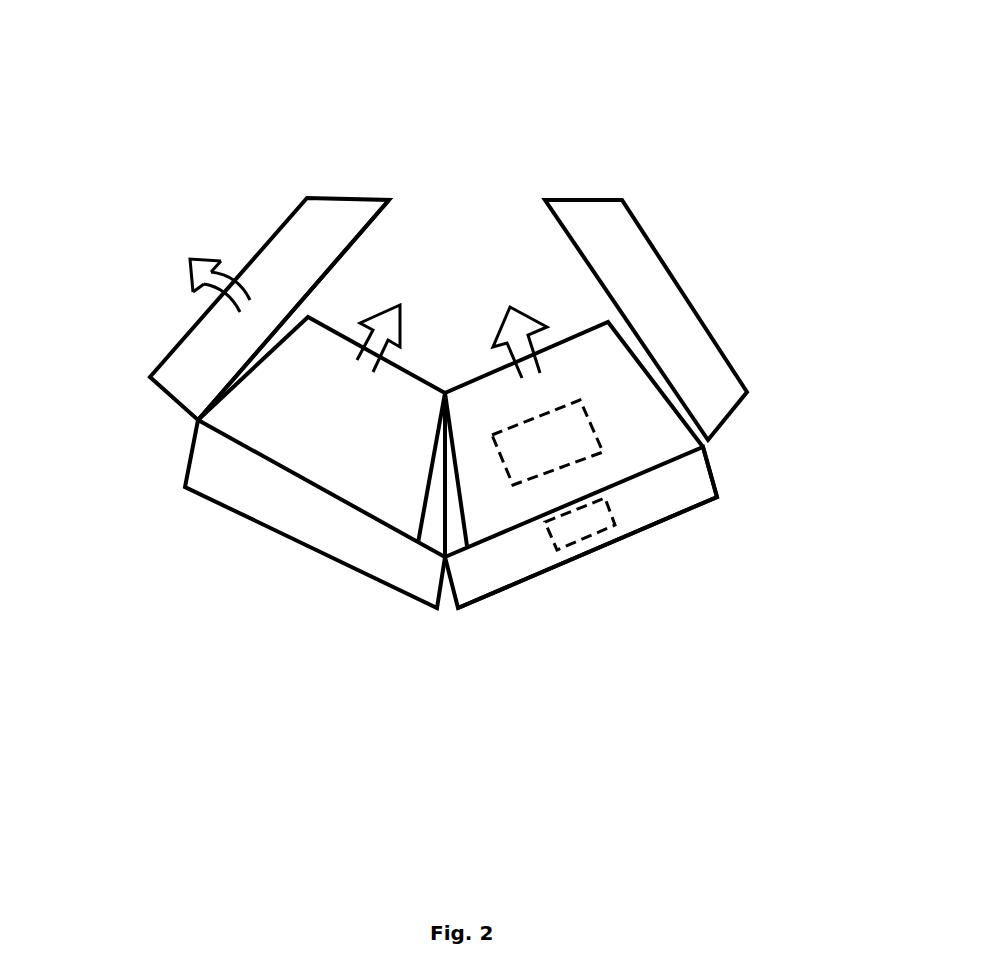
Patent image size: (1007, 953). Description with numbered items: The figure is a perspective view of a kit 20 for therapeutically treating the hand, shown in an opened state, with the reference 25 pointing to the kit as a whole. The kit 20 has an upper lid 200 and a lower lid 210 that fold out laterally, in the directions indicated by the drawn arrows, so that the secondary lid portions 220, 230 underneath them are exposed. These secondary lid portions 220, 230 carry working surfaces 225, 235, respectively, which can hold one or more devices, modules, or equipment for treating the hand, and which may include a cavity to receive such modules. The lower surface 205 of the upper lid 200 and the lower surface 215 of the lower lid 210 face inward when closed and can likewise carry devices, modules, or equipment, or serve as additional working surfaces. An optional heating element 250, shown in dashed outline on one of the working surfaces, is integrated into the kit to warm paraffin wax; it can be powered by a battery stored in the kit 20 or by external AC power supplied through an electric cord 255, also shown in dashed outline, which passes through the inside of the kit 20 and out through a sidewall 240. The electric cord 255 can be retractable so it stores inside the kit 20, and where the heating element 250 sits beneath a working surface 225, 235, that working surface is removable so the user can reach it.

The kit 20 is at (332, 64).
The container 25 is at (596, 123).
The upper lid 200 is at (663, 167).
The lower surface of the upper lid 205 is at (541, 220).
The lower lid 210 is at (210, 196).
The lower surface of the lower lid 215 is at (396, 225).
The secondary lid portion 220 is at (625, 584).
The working surface 225 is at (595, 358).
The secondary lid portion 230 is at (287, 577).
The working surface 235 is at (308, 355).
The sidewall 240 is at (687, 539).
The heating element 250 is at (547, 442).
The electric cord 255 is at (580, 524).